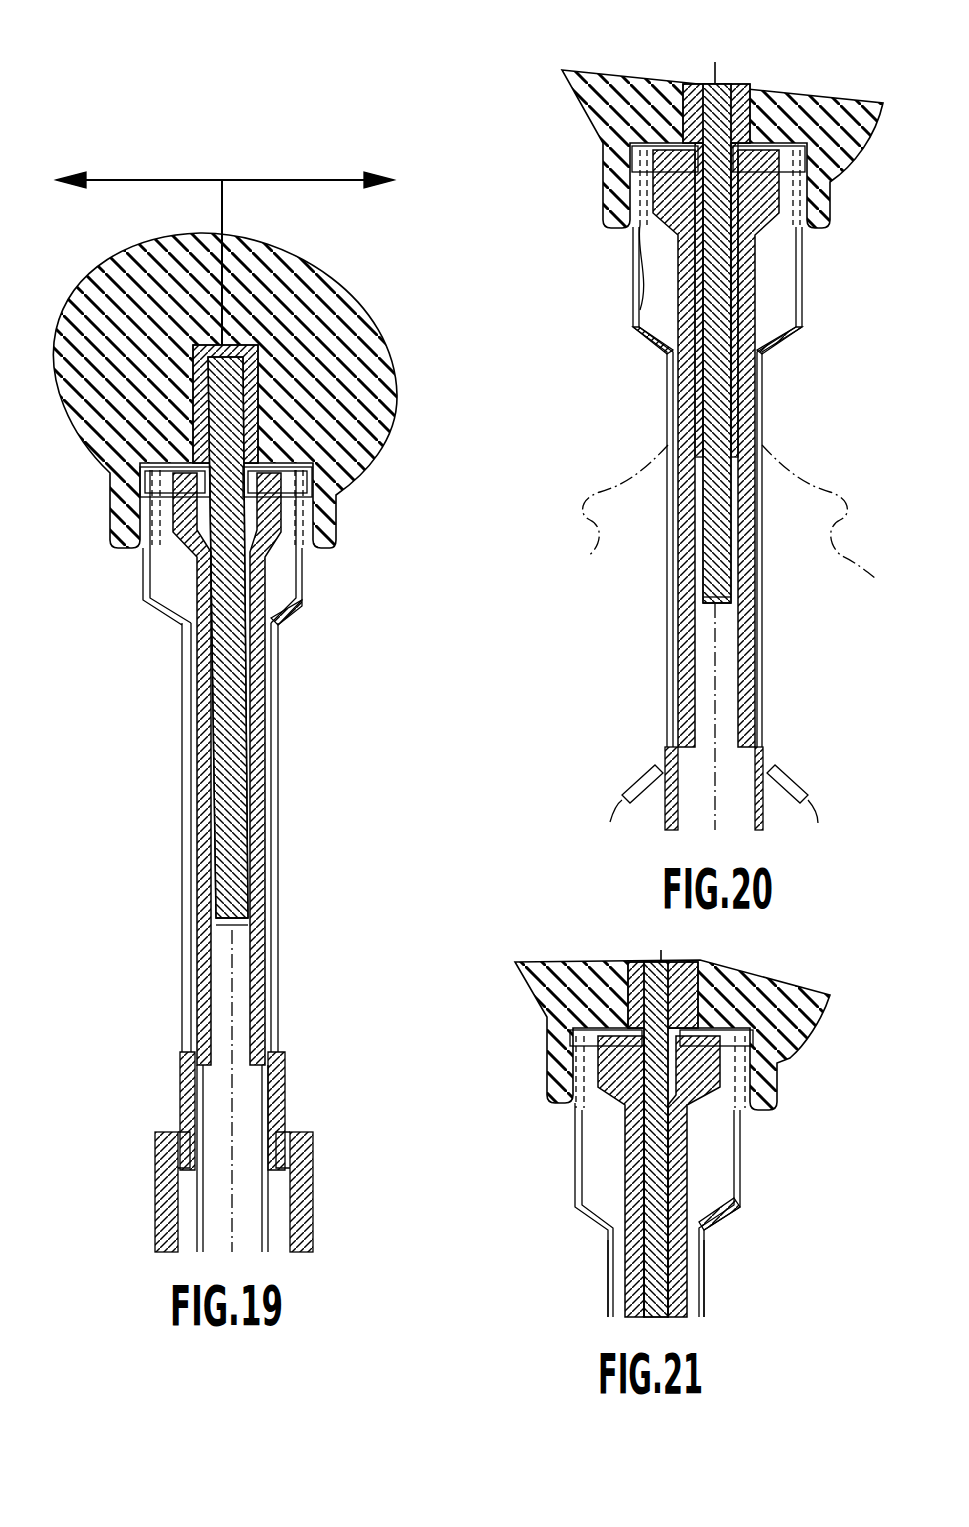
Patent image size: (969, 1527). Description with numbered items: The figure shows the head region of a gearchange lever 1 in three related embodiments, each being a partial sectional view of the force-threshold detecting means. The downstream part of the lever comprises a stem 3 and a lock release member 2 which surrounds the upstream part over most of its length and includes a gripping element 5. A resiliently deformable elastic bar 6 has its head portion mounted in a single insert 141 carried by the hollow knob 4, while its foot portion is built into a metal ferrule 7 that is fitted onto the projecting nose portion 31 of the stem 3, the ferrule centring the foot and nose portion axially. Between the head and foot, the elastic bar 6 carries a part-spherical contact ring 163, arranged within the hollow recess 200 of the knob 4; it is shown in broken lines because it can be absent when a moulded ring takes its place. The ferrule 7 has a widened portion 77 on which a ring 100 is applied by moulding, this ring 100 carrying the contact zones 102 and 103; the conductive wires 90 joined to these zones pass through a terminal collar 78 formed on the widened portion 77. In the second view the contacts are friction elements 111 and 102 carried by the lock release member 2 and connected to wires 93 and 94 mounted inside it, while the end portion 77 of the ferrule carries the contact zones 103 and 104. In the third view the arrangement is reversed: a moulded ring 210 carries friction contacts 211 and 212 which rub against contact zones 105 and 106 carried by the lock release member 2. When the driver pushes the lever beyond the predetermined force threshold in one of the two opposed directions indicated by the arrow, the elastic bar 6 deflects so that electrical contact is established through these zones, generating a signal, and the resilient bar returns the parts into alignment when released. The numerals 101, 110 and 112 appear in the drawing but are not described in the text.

In FIG. 19, the gear lever 1 is at (288, 800).
In FIG. 20, the lock release member 2 is at (667, 632).
In FIG. 21, the lock release member 2 is at (606, 1272).
In FIG. 19, the stem 3 is at (245, 1122).
In FIG. 19, the knob 4 is at (350, 290).
In FIG. 20, the knob 4 is at (842, 216).
In FIG. 21, the knob 4 is at (545, 983).
In FIG. 19, the gripping element 5 is at (163, 620).
In FIG. 21, the gripping element 5 is at (590, 1222).
In FIG. 19, the elastic bar 6 is at (240, 722).
In FIG. 20, the elastic bar 6 is at (698, 410).
In FIG. 21, the elastic bar 6 is at (700, 1205).
In FIG. 19, the ferrule 7 is at (265, 910).
In FIG. 20, the ferrule 7 is at (747, 402).
In FIG. 19, the nose portion 31 is at (232, 995).
In FIG. 20, the nose portion 31 is at (720, 655).
In FIG. 19, the widened portion 77 is at (300, 575).
In FIG. 20, the widened portion 77 is at (640, 210).
In FIG. 21, the widened portion 77 is at (582, 1122).
In FIG. 19, the terminal collar 78 is at (125, 521).
In FIG. 19, the wires 90 is at (212, 1200).
In FIG. 20, the wire 93 is at (640, 775).
In FIG. 20, the wire 94 is at (778, 768).
In FIG. 19, the ring 100 is at (300, 515).
In FIG. 19, the recess 101 is at (300, 455).
In FIG. 19, the contact zone 102 is at (152, 445).
In FIG. 20, the contact zone 103 is at (622, 120).
In FIG. 20, the contact zone 104 is at (800, 110).
In FIG. 21, the contact zone 105 is at (603, 1185).
In FIG. 21, the contact zone 106 is at (722, 1178).
In FIG. 20, the stem 110 is at (778, 110).
In FIG. 20, the friction element 111 is at (640, 300).
In FIG. 20, the sleeve wall 112 is at (798, 308).
In FIG. 19, the insert 141 is at (262, 385).
In FIG. 19, the contact ring 163 is at (345, 500).
In FIG. 19, the hollow recess 200 is at (150, 570).
In FIG. 21, the moulded ring 210 is at (580, 1140).
In FIG. 21, the friction contact 211 is at (578, 1080).
In FIG. 21, the friction contact 212 is at (748, 1092).